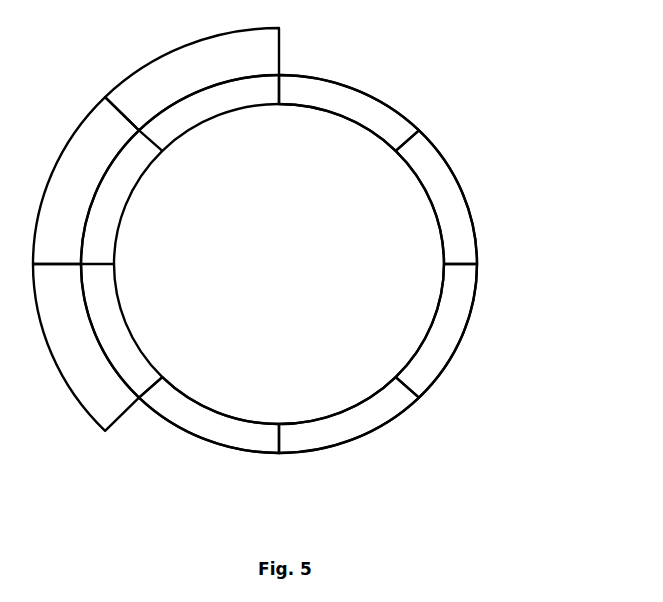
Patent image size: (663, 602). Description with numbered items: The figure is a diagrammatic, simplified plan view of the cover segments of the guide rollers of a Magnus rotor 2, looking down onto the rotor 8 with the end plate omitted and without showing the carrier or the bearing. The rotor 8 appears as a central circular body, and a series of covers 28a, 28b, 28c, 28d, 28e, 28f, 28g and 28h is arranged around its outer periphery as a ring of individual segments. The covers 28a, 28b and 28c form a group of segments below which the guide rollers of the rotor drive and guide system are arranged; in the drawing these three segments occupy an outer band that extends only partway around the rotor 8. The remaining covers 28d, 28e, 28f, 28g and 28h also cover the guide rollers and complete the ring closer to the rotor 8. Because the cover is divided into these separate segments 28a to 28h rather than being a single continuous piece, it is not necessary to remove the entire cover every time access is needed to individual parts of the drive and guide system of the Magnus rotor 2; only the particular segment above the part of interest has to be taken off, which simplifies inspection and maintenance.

The Magnus rotor 2 is at (289, 263).
The rotor 8 is at (223, 285).
The cover segment 28a is at (86, 347).
The cover segment 28b is at (86, 180).
The cover segment 28c is at (192, 79).
The cover segment 28d is at (352, 100).
The cover segment 28e is at (448, 200).
The cover segment 28f is at (447, 343).
The cover segment 28g is at (358, 423).
The cover segment 28h is at (209, 437).